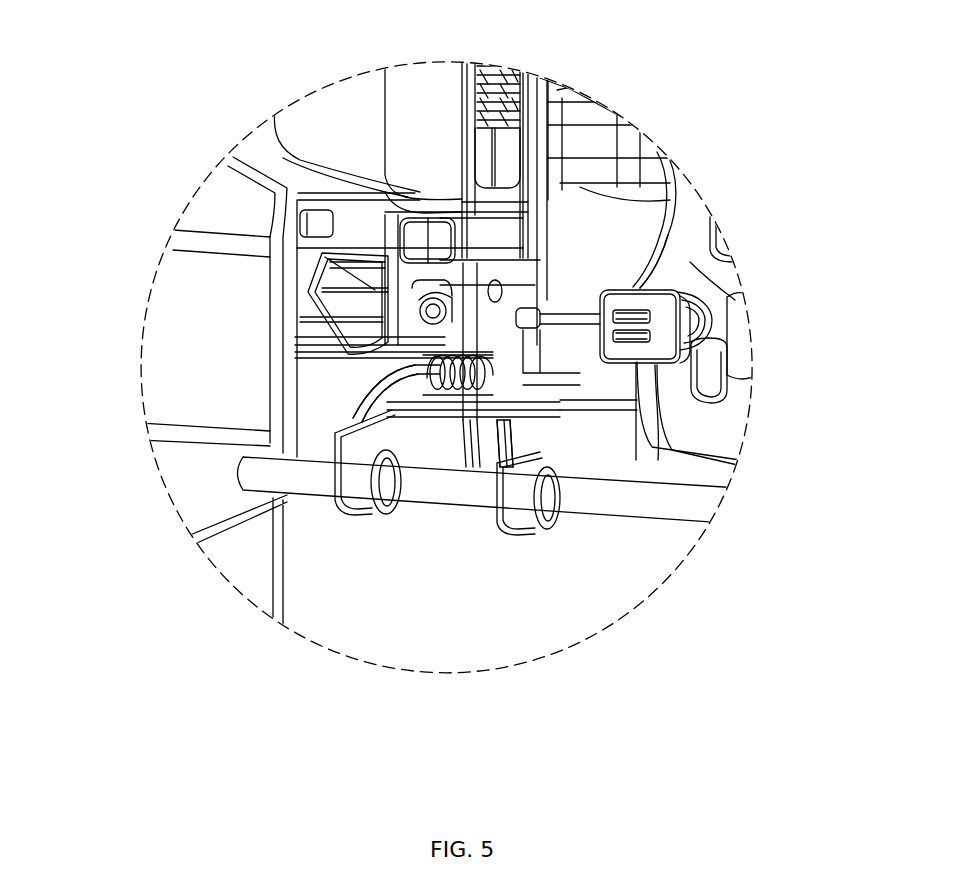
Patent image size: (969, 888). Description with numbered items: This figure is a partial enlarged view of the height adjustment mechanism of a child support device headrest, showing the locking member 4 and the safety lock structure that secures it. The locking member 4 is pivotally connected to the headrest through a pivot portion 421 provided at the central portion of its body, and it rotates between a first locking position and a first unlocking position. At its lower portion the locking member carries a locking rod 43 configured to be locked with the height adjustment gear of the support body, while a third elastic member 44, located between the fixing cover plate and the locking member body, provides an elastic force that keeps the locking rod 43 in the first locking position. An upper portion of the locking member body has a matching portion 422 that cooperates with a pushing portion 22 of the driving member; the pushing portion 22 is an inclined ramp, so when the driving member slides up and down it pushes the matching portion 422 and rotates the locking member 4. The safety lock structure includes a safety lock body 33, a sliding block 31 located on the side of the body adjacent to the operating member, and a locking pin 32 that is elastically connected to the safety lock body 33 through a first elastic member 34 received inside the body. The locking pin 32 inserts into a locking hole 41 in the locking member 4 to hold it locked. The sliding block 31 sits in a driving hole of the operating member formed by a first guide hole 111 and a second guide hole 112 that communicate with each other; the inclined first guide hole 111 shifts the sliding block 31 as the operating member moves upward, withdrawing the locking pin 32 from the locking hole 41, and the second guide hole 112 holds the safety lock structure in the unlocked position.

The locking member 4 is at (457, 498).
The locking hole 41 is at (511, 322).
The pivot portion 421 is at (500, 272).
The matching portion 422 is at (500, 495).
The locking rod 43 is at (290, 478).
The third elastic member 44 is at (400, 406).
The pushing portion 22 is at (452, 458).
The sliding block 31 is at (712, 340).
The locking pin 32 is at (540, 320).
The safety lock body 33 is at (613, 363).
The first elastic member 34 is at (648, 363).
The first guide hole 111 is at (685, 280).
The second guide hole 112 is at (703, 403).